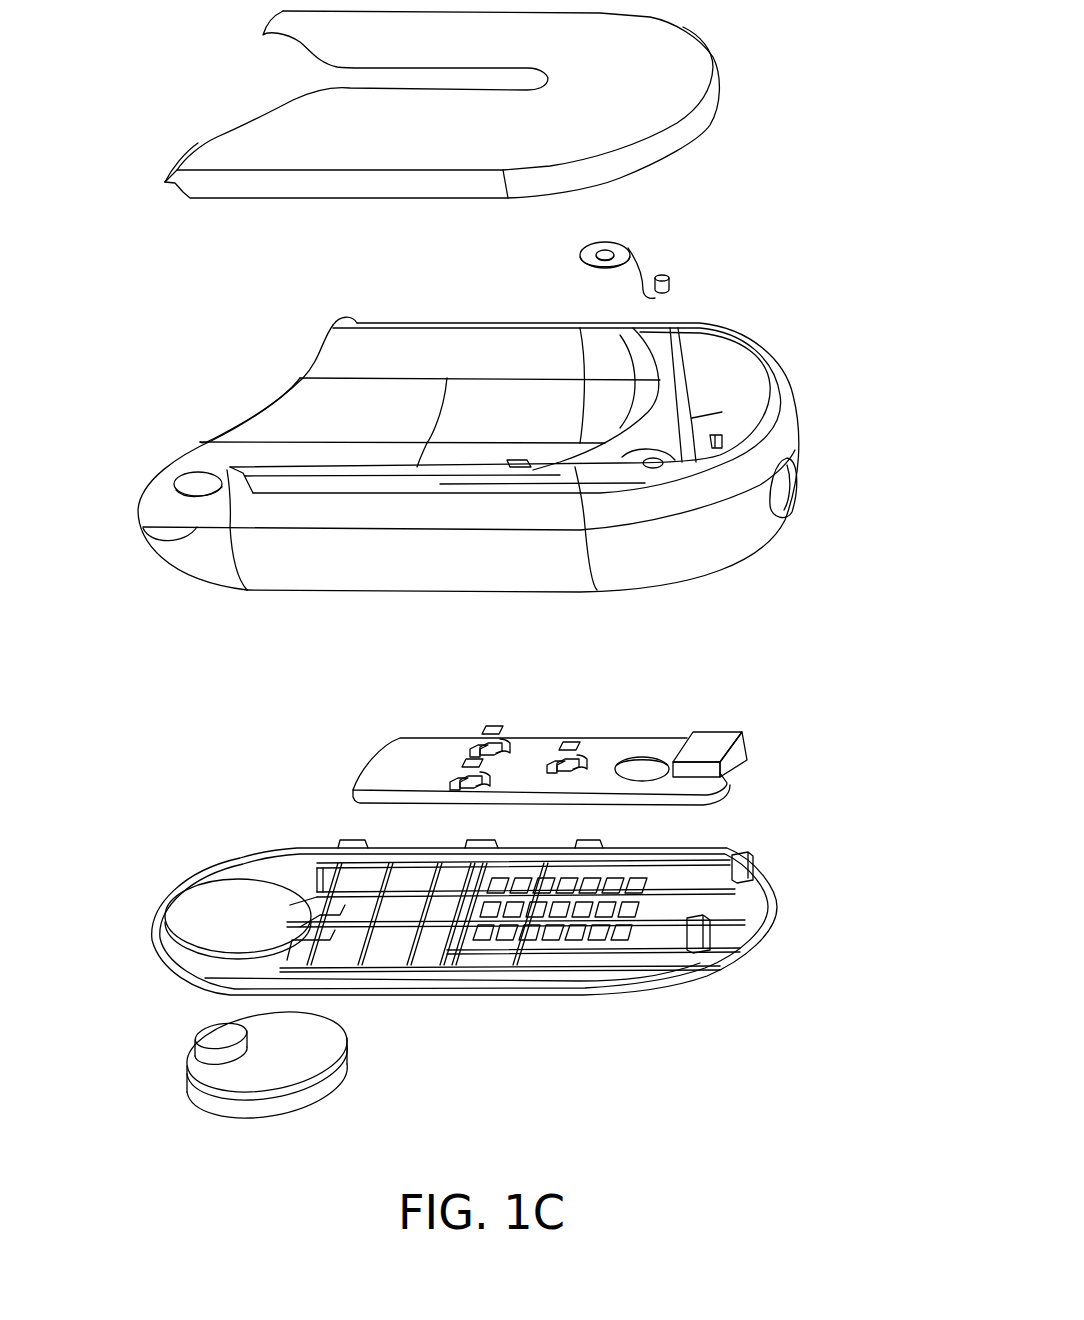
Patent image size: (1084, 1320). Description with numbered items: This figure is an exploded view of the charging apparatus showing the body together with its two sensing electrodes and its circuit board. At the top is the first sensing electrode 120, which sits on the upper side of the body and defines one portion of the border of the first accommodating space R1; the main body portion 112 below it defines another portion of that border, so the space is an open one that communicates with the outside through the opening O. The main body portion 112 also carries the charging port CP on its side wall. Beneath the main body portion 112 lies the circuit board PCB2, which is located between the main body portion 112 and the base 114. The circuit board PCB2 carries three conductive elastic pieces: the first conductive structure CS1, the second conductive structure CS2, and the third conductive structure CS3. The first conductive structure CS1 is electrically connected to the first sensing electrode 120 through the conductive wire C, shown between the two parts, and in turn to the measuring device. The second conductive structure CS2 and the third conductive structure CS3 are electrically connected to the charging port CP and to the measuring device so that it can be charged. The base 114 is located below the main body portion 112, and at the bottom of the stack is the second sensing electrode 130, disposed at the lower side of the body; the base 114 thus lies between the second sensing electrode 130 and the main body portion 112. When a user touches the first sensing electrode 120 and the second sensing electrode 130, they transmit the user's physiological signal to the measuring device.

The first sensing electrode 120 is at (673, 60).
The conductive wire C is at (598, 242).
The first accommodating space R1 is at (537, 356).
The opening O is at (222, 417).
The charging port CP is at (784, 490).
The main body portion 112 is at (743, 527).
The circuit board PCB2 is at (727, 787).
The first conductive structure CS1 is at (573, 743).
The second conductive structure CS2 is at (467, 763).
The third conductive structure CS3 is at (497, 725).
The base 114 is at (750, 917).
The second sensing electrode 130 is at (235, 1108).